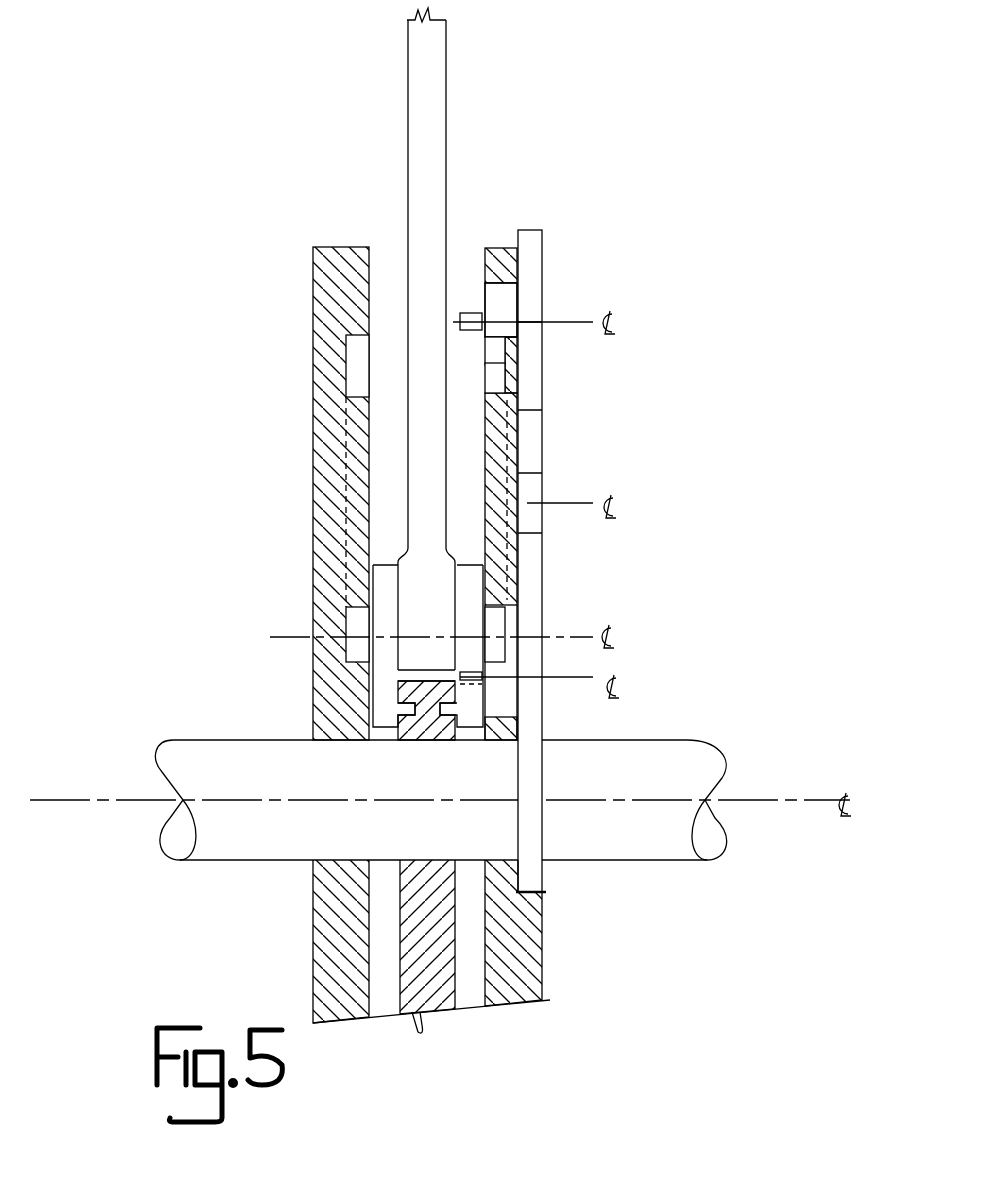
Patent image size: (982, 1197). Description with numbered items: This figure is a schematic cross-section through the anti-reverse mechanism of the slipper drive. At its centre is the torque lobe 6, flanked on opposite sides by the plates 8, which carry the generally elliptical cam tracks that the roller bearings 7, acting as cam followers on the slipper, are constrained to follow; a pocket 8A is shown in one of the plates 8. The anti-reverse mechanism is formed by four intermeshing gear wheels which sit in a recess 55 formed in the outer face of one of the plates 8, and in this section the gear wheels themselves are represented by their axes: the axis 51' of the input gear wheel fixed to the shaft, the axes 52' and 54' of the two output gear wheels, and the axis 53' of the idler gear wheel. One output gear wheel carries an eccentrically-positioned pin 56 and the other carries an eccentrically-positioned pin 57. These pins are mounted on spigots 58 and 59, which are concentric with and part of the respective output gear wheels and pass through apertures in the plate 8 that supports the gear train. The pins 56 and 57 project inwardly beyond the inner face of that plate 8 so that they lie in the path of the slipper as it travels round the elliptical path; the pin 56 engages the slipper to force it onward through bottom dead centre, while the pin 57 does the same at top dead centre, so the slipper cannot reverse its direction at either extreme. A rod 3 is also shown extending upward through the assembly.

The rod 3 is at (437, 163).
The torque lobe 6 is at (460, 982).
The roller bearings 7 is at (505, 620).
The plates 8 is at (340, 245).
The recess in block 8A is at (348, 358).
The axis of input gear wheel 51' is at (444, 810).
The axis of output gear wheel 52' is at (605, 678).
The axis of idler gear wheel 53' is at (614, 482).
The axis of output gear wheel 54' is at (583, 344).
The recess 55 is at (545, 893).
The pin 56 is at (470, 668).
The pin 57 is at (472, 313).
The spigot 58 is at (490, 722).
The spigot 59 is at (500, 285).